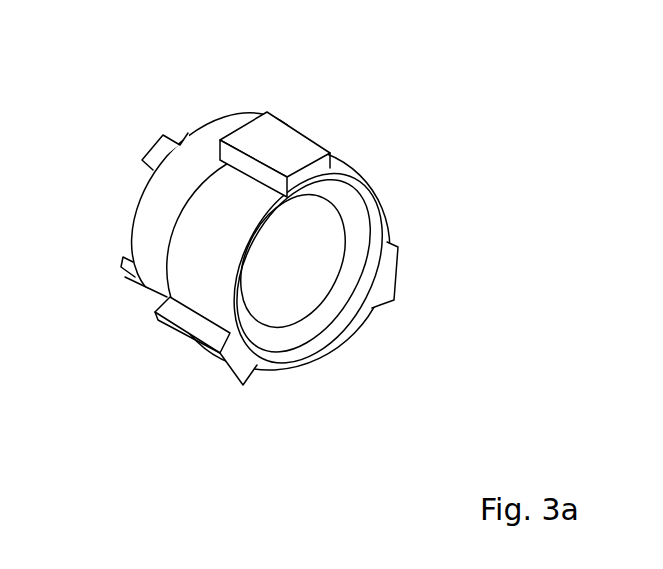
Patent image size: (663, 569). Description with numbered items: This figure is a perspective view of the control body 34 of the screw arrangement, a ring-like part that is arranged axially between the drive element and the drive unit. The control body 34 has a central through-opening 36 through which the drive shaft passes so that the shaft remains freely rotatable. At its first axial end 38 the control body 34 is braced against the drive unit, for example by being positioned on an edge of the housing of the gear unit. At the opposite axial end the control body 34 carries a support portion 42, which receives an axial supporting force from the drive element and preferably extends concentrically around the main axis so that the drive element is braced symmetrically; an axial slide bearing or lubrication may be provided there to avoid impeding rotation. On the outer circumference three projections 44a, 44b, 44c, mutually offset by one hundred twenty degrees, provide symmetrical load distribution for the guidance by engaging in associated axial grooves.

The control body 34 is at (218, 128).
The central through-opening 36 is at (277, 296).
The first axial end 38 is at (142, 158).
The support portion 42 is at (377, 191).
The projection 44a is at (275, 133).
The projection 44b is at (385, 273).
The projection 44c is at (188, 345).